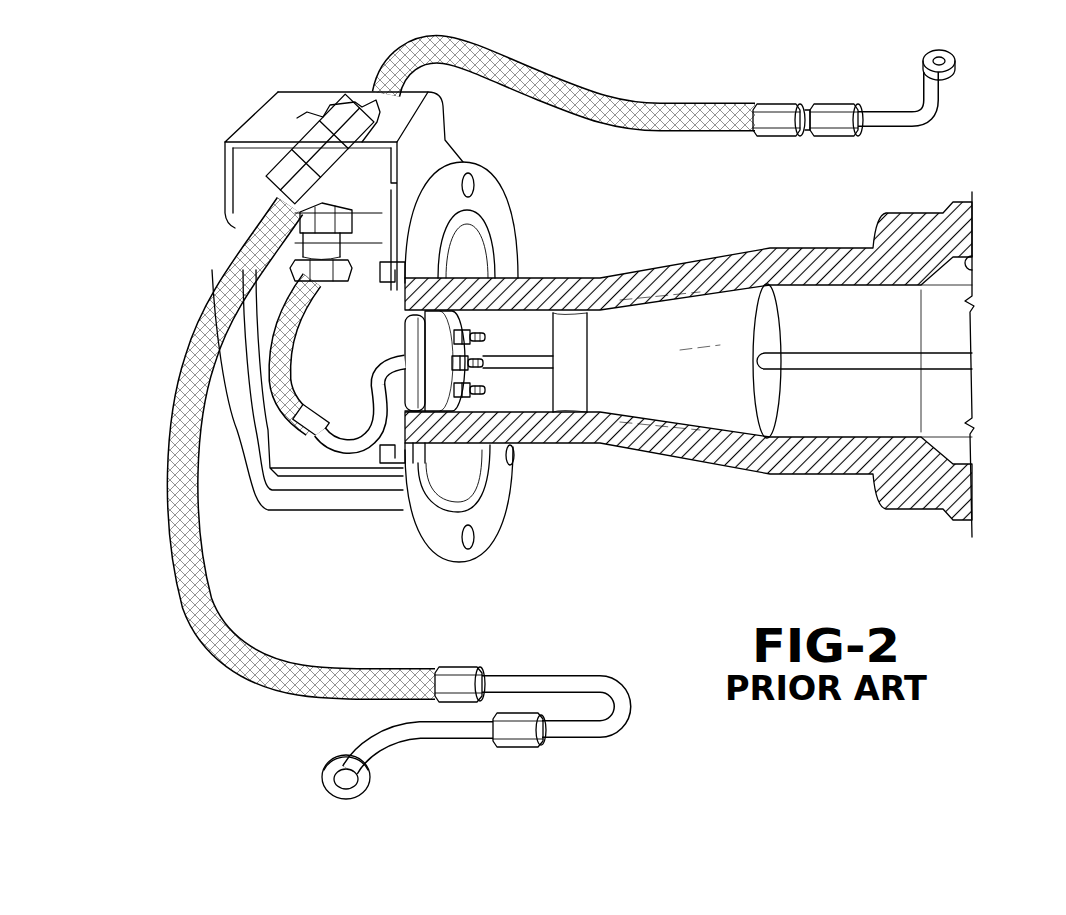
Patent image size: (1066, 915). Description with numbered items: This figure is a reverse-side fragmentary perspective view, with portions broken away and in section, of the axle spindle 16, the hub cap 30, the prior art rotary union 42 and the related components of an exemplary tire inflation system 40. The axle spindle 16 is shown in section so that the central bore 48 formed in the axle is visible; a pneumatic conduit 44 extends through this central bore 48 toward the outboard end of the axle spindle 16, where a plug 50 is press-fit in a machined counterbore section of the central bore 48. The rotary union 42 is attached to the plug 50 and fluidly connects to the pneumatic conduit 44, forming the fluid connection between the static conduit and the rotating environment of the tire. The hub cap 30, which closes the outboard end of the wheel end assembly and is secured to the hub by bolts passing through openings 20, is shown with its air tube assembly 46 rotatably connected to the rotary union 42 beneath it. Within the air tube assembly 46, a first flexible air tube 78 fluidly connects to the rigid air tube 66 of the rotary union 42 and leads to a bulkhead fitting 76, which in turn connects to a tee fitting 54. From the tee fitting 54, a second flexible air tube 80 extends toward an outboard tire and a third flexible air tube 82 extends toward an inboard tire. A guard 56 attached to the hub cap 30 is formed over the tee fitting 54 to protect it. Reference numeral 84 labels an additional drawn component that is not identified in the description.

The axle spindle 16 is at (826, 247).
The openings 20 is at (475, 536).
The hub cap 30 is at (232, 423).
The tire inflation system 40 is at (950, 369).
The rotary union 42 is at (463, 308).
The pneumatic conduit 44 is at (935, 357).
The air tube assembly 46 is at (274, 377).
The central bore 48 is at (974, 273).
The plug 50 is at (433, 440).
The tee fitting 54 is at (316, 160).
The guard 56 is at (283, 98).
The rigid air tube 66 is at (350, 448).
The bulkhead fitting 76 is at (341, 274).
The first flexible air tube 78 is at (283, 343).
The second flexible air tube 80 is at (243, 648).
The third flexible air tube 82 is at (500, 66).
The electrical lead 84 is at (487, 392).